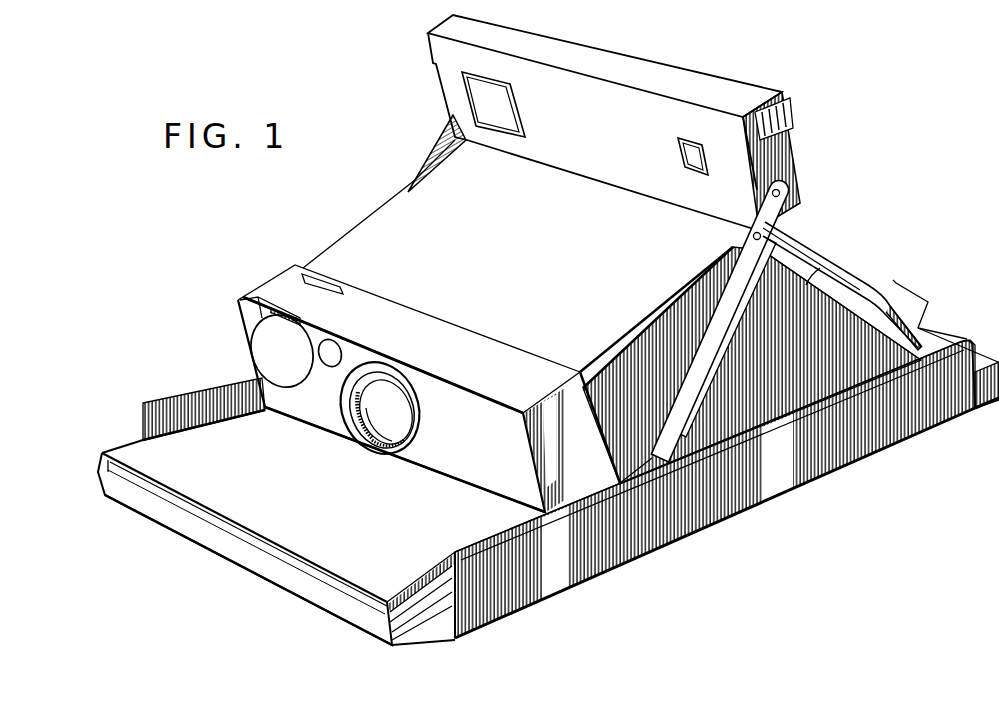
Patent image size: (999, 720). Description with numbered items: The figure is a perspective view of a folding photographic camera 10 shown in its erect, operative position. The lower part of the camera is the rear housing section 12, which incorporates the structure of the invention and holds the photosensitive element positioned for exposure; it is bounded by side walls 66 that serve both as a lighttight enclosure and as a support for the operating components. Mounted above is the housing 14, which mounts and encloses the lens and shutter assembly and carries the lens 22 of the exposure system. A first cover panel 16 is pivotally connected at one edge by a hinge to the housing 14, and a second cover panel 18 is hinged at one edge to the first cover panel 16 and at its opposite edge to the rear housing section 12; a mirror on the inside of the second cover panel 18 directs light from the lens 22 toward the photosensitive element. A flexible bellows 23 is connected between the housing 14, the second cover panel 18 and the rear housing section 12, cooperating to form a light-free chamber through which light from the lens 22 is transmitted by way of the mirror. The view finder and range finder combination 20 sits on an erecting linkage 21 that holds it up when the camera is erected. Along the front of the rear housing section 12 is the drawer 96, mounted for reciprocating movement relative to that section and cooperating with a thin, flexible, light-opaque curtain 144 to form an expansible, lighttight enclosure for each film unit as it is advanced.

The camera 10 is at (370, 130).
The rear housing section 12 is at (731, 527).
The housing 14 is at (279, 272).
The first cover panel 16 is at (390, 224).
The second cover panel 18 is at (832, 253).
The view finder and range finder combination 20 is at (737, 97).
The erecting linkage 21 is at (433, 153).
The lens 22 is at (383, 414).
The flexible bellows 23 is at (815, 297).
The side walls 66 is at (778, 484).
The drawer 96 is at (276, 590).
The curtain 144 is at (368, 523).